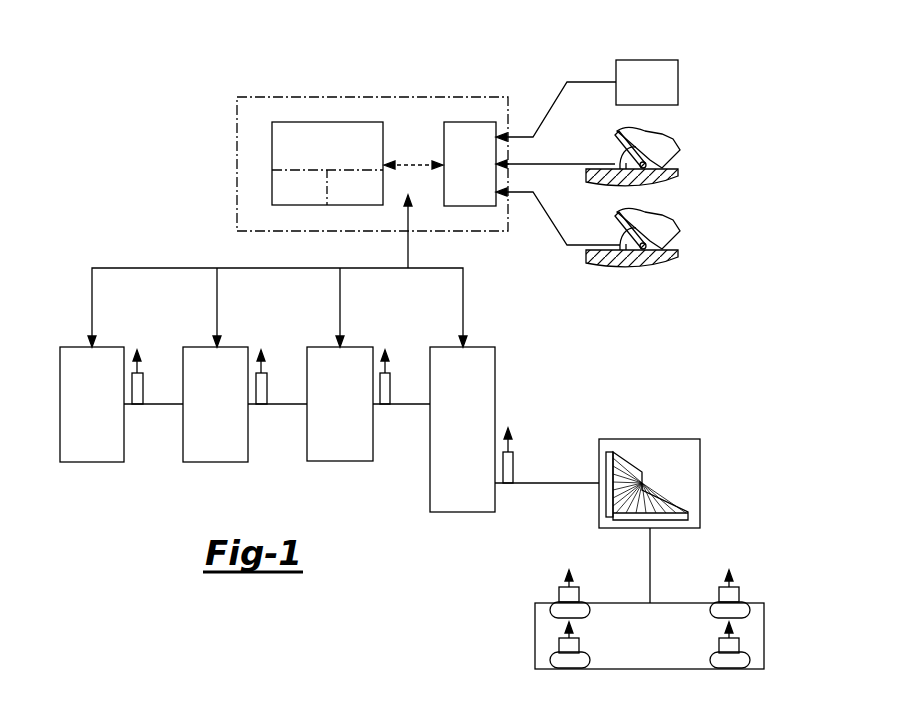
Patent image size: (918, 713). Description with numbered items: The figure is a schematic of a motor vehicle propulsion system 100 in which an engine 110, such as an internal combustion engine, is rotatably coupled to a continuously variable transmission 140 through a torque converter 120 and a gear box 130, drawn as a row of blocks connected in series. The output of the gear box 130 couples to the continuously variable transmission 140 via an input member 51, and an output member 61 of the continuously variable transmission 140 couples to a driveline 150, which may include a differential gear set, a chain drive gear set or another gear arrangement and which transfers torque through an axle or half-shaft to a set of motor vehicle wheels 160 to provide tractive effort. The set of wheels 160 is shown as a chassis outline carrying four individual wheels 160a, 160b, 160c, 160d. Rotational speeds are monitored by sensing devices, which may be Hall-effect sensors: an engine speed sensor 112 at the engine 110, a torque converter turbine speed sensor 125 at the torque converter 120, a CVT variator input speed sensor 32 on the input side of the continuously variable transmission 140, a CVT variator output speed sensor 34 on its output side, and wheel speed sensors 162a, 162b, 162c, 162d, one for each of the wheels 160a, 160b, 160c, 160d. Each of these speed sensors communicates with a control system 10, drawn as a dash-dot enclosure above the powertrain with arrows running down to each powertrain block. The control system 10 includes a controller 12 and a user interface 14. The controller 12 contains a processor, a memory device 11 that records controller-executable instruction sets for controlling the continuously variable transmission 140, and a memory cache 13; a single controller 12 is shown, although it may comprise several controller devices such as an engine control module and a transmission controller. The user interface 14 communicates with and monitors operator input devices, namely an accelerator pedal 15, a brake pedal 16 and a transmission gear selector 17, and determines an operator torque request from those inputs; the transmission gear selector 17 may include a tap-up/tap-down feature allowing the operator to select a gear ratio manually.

The motor vehicle propulsion system 100 is at (158, 118).
The control system 10 is at (290, 97).
The memory device 11 is at (358, 190).
The controller 12 is at (325, 122).
The memory cache 13 is at (278, 191).
The user interface 14 is at (469, 122).
The accelerator pedal 15 is at (620, 232).
The brake pedal 16 is at (619, 150).
The transmission gear selector 17 is at (678, 83).
The engine 110 is at (80, 413).
The engine speed sensor 112 is at (143, 384).
The torque converter 120 is at (203, 413).
The torque converter turbine speed sensor 125 is at (267, 384).
The gear box 130 is at (328, 413).
The CVT variator input speed sensor 32 is at (390, 384).
The continuously variable transmission 140 is at (450, 413).
The CVT variator output speed sensor 34 is at (513, 463).
The input member 51 is at (407, 410).
The output member 61 is at (552, 483).
The driveline 150 is at (700, 483).
The set of motor vehicle wheels 160 is at (764, 637).
The wheel 160a is at (740, 611).
The wheel 160b is at (740, 662).
The wheel 160c is at (557, 612).
The wheel 160d is at (560, 662).
The wheel speed sensor 162a is at (742, 593).
The wheel speed sensor 162b is at (742, 646).
The wheel speed sensor 162c is at (557, 593).
The wheel speed sensor 162d is at (555, 645).